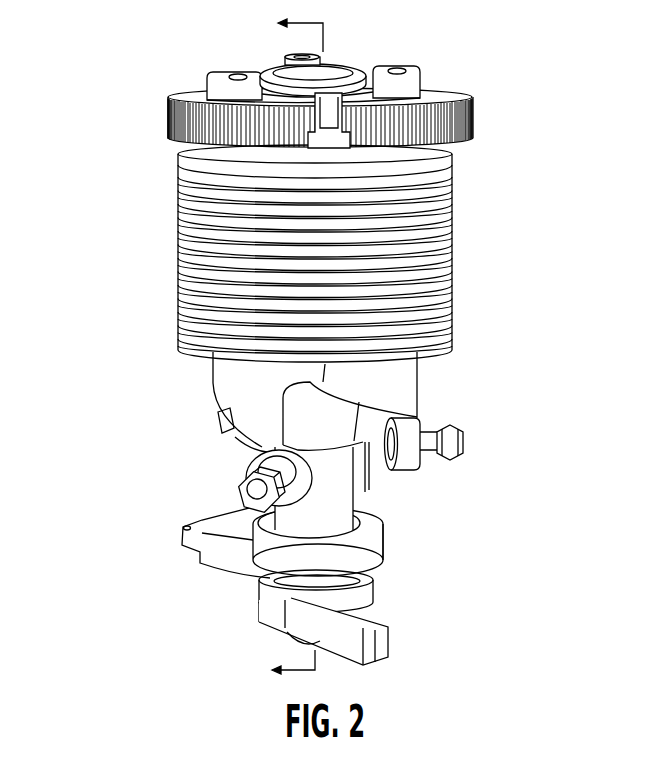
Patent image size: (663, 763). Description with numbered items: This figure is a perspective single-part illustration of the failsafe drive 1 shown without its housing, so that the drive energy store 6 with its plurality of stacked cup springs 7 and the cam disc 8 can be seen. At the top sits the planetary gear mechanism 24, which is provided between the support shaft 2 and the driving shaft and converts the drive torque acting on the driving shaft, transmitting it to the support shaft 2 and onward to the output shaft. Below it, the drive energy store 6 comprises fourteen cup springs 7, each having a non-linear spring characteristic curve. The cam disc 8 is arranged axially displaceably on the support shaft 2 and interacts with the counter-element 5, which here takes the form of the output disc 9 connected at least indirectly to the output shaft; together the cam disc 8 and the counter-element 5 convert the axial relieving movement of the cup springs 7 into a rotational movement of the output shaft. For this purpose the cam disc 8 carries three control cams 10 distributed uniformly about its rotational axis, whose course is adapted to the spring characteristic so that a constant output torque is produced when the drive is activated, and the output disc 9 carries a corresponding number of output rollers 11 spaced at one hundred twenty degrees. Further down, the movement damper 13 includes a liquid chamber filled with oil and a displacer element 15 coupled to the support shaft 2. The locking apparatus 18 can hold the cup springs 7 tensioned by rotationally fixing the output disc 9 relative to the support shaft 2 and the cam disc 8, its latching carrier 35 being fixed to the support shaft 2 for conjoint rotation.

The failsafe drive 1 is at (291, 345).
The support shaft 2 is at (238, 510).
The counter-element 5 is at (485, 462).
The drive energy store 6 is at (110, 155).
The cup springs 7 is at (178, 250).
The cam disc 8 is at (409, 370).
The output disc 9 is at (510, 479).
The control cams 10 is at (346, 424).
The output rollers 11 is at (224, 420).
The movement damper 13 is at (125, 566).
The displacer element 15 is at (378, 645).
The locking apparatus 18 is at (128, 513).
The planetary gear mechanism 24 is at (183, 60).
The latching carrier 35 is at (373, 538).